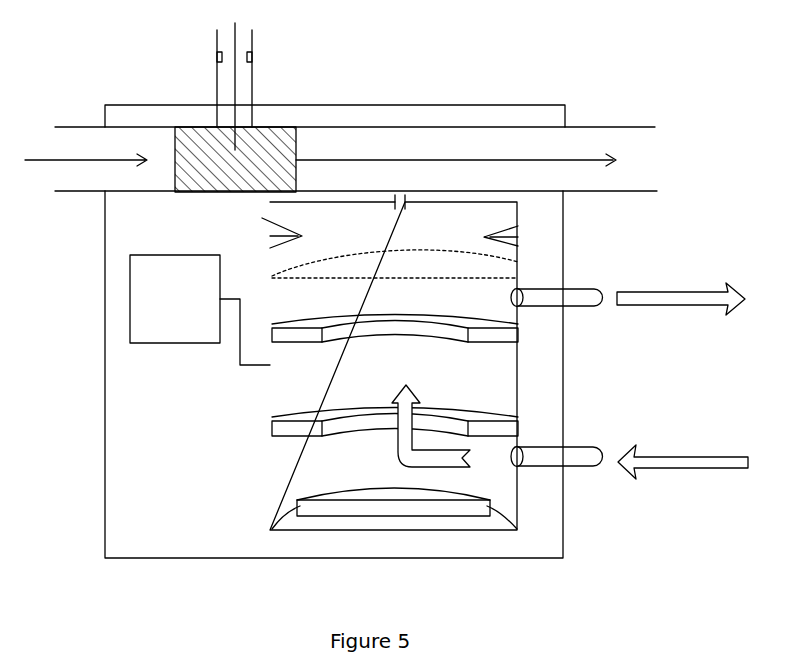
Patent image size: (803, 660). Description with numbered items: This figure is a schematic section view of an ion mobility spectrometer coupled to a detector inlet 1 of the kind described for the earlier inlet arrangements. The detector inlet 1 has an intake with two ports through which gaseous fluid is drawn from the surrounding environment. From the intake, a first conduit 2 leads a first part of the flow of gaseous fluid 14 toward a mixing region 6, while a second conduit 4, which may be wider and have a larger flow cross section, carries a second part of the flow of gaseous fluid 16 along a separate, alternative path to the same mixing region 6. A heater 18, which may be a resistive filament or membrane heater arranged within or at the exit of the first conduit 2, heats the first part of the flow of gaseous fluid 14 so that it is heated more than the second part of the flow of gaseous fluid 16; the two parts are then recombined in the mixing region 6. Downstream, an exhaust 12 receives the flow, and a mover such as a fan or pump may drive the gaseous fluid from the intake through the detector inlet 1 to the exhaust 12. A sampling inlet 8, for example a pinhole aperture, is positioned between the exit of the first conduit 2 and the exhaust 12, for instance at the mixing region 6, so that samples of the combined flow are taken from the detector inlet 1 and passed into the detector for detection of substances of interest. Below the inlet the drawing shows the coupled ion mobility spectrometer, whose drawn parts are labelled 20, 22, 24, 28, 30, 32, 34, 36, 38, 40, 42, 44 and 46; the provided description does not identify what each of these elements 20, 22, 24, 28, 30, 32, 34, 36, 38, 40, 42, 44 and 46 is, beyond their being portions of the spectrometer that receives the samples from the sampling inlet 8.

The detector inlet 1 is at (450, 114).
The first conduit 2 is at (254, 34).
The second conduit 4 is at (120, 192).
The mixing region 6 is at (277, 156).
The sampling inlet 8 is at (406, 186).
The exhaust 12 is at (632, 168).
The first part of the flow of gaseous fluid 14 is at (219, 32).
The second part of the flow of gaseous fluid 16 is at (42, 157).
The heater 18 is at (222, 62).
The air duct 20 is at (480, 160).
The enclosure 22 is at (100, 410).
The controller 24 is at (187, 344).
The chamber 28 is at (270, 522).
The heater 30 is at (393, 508).
The inlet port 32 is at (575, 467).
The lower tray 34 is at (490, 421).
The chamber interior 36 is at (437, 363).
The upper tray 38 is at (506, 333).
The outlet port 40 is at (578, 298).
The filter dome 42 is at (472, 262).
The flow direction arrows 44 is at (275, 234).
The chamber lid 46 is at (280, 215).